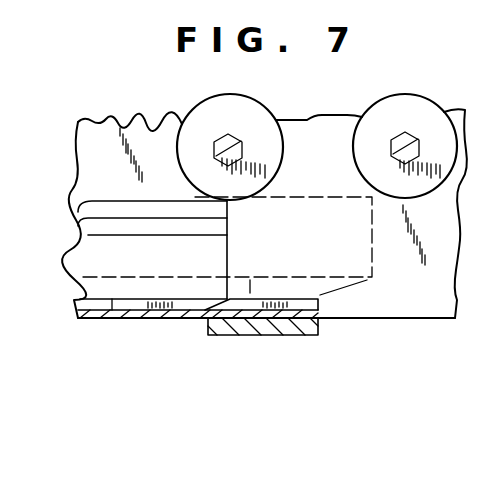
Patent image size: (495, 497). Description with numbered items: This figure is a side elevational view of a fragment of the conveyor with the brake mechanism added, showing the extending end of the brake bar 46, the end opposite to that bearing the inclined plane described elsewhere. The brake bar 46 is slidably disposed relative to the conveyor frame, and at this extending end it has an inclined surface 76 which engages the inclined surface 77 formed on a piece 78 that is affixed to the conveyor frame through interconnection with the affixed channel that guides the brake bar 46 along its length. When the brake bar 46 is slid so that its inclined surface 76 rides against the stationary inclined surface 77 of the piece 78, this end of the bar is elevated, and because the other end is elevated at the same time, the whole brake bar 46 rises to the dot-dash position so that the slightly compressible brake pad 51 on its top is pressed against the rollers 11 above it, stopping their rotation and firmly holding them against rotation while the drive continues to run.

The rollers 11 is at (373, 113).
The brake bar 46 is at (217, 253).
The brake pad 51 is at (173, 228).
The inclined surface 76 is at (207, 320).
The inclined surface 77 is at (240, 298).
The piece 78 is at (321, 300).